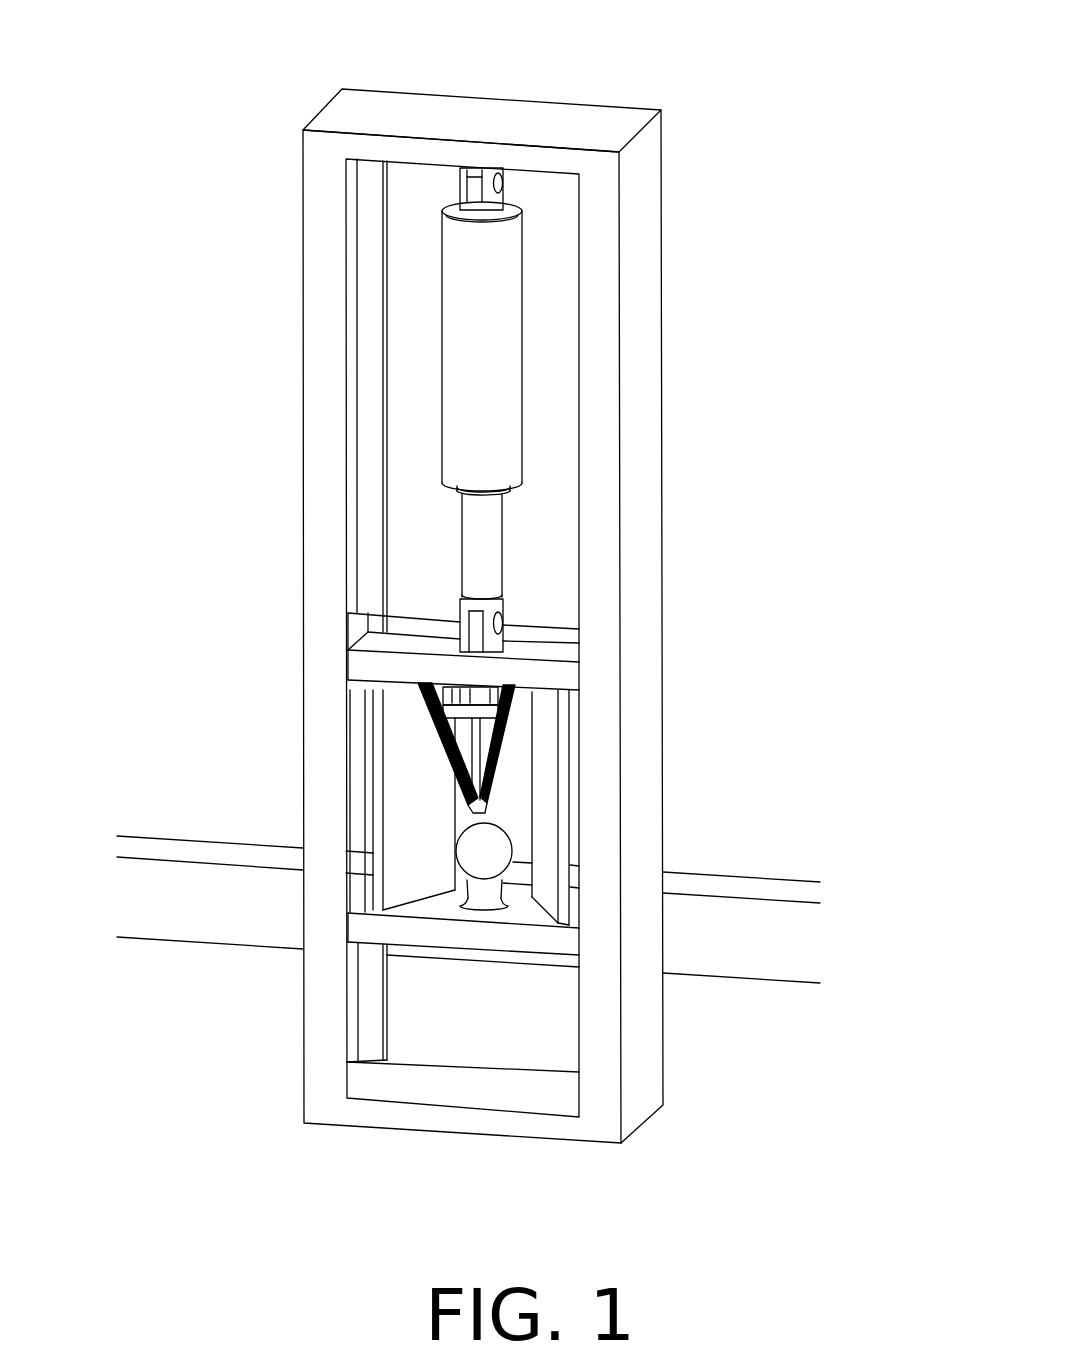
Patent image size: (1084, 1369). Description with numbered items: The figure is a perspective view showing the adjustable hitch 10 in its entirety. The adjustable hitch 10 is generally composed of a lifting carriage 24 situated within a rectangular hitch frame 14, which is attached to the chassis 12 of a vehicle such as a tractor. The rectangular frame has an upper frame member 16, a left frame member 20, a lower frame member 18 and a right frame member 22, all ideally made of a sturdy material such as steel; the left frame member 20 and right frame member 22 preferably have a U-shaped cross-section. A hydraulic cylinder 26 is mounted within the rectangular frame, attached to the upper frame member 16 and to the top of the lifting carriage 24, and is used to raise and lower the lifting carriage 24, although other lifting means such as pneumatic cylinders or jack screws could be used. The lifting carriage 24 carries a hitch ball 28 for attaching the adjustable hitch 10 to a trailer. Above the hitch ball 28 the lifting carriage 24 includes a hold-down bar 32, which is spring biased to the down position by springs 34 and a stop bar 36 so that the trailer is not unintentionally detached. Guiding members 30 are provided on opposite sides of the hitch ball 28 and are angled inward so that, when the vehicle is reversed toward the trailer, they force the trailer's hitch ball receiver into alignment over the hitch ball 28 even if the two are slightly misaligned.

The adjustable hitch 10 is at (690, 144).
The chassis 12 is at (518, 940).
The hitch frame 14 is at (377, 599).
The upper frame member 16 is at (482, 76).
The lower frame member 18 is at (412, 1159).
The left frame member 20 is at (257, 610).
The right frame member 22 is at (735, 626).
The lifting carriage 24 is at (355, 768).
The hydraulic cylinder 26 is at (633, 410).
The hitch ball 28 is at (630, 968).
The guiding members 30 is at (548, 878).
The hold-down bar 32 is at (626, 707).
The springs 34 is at (482, 776).
The stop bar 36 is at (641, 651).